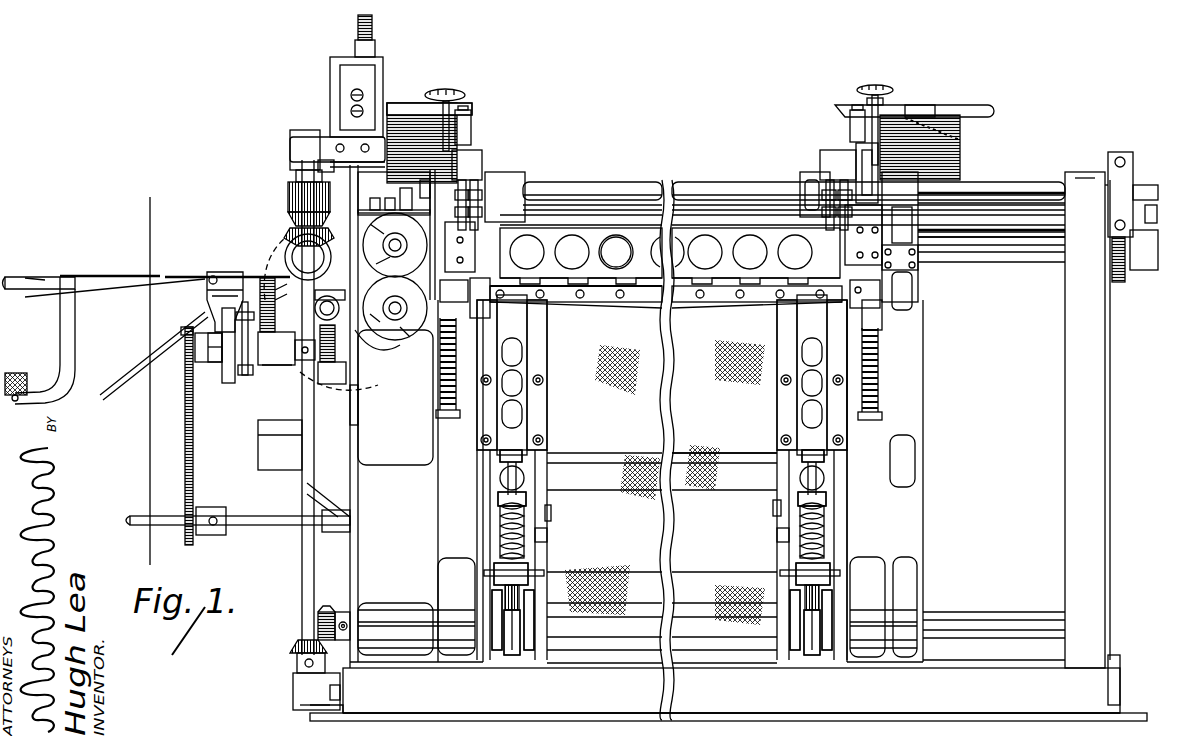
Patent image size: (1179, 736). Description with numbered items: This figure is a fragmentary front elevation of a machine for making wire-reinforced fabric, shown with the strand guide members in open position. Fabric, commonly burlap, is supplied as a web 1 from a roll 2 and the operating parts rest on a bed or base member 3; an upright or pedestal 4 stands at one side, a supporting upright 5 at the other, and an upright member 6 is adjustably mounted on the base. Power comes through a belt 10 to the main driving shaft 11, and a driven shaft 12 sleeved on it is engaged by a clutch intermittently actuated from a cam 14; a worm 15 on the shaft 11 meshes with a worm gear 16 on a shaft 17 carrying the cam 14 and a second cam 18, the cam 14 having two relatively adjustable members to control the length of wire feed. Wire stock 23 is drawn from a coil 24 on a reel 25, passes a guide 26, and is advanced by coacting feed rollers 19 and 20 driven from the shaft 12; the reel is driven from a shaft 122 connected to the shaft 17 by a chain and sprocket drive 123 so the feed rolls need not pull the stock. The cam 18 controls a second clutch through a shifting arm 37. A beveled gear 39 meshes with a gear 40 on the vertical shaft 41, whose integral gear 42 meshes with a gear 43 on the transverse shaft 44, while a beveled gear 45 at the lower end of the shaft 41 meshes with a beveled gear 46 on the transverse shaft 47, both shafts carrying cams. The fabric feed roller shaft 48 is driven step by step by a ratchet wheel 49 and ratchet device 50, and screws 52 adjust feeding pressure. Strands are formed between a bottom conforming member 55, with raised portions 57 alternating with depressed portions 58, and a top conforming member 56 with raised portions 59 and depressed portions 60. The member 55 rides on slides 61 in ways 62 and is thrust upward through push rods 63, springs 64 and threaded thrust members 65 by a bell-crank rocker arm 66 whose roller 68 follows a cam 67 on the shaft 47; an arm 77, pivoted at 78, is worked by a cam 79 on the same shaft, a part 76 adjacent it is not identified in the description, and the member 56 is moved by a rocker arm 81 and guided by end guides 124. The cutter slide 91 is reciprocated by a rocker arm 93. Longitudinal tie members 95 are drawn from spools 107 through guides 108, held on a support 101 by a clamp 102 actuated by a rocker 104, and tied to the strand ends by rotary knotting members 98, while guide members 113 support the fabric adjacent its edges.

The web 1 is at (710, 475).
The roll 2 is at (143, 200).
The bed or base member 3 is at (613, 706).
The upright or pedestal 4 is at (360, 540).
The supporting upright 5 is at (1078, 446).
The upright or pedestal member 6 is at (915, 531).
The belt 10 is at (122, 385).
The main driving shaft 11 is at (388, 308).
The driven shaft 12 is at (395, 245).
The cam 14 is at (224, 372).
The worm 15 is at (370, 405).
The worm gear 16 is at (345, 372).
The shaft 17 is at (300, 368).
The second cam 18 is at (248, 378).
The feed roller 19 is at (398, 335).
The feed roller 20 is at (400, 208).
The wire stock 23 is at (118, 275).
The coil 24 is at (18, 372).
The reel 25 is at (66, 331).
The guide 26 is at (290, 236).
The shifting arm 37 is at (222, 302).
The beveled gear 39 is at (285, 256).
The gear 40 is at (290, 216).
The vertical shaft 41 is at (303, 458).
The gear 42 is at (300, 200).
The gear 43 is at (322, 168).
The transverse shaft 44 is at (600, 192).
The beveled gear 45 is at (290, 645).
The beveled gear 46 is at (316, 618).
The transverse shaft 47 is at (963, 625).
The shaft 48 is at (1016, 250).
The ratchet wheel 49 is at (1119, 282).
The ratchet device 50 is at (1140, 232).
The screws 52 is at (466, 100).
The bottom conforming member 55 is at (597, 300).
The top conforming member 56 is at (730, 236).
The raised portions 57 is at (632, 290).
The depressed portions 58 is at (708, 292).
The raised portions 59 is at (612, 270).
The depressed portions 60 is at (585, 270).
The slides 61 is at (520, 396).
The ways 62 is at (540, 420).
The push rods 63 is at (500, 465).
The springs 64 is at (500, 525).
The thrust members 65 is at (505, 500).
The rocker arm 66 is at (500, 574).
The cam 67 is at (514, 652).
The roller 68 is at (528, 620).
The stop 76 is at (776, 505).
The arm 77 is at (540, 535).
The pivot 78 is at (552, 513).
The cam 79 is at (498, 646).
The rocker arm 81 is at (500, 190).
The slide 91 is at (936, 330).
The rocker arm 93 is at (882, 226).
The longitudinal tie members 95 is at (403, 135).
The rotary knotting or tying members 98 is at (970, 316).
The support 101 is at (545, 303).
The clamp 102 is at (520, 212).
The rocker 104 is at (478, 182).
The spools 107 is at (438, 105).
The guides 108 is at (476, 112).
The guide members 113 is at (488, 284).
The shaft 122 is at (250, 524).
The chain and sprocket drive 123 is at (196, 477).
The end guides 124 is at (890, 252).